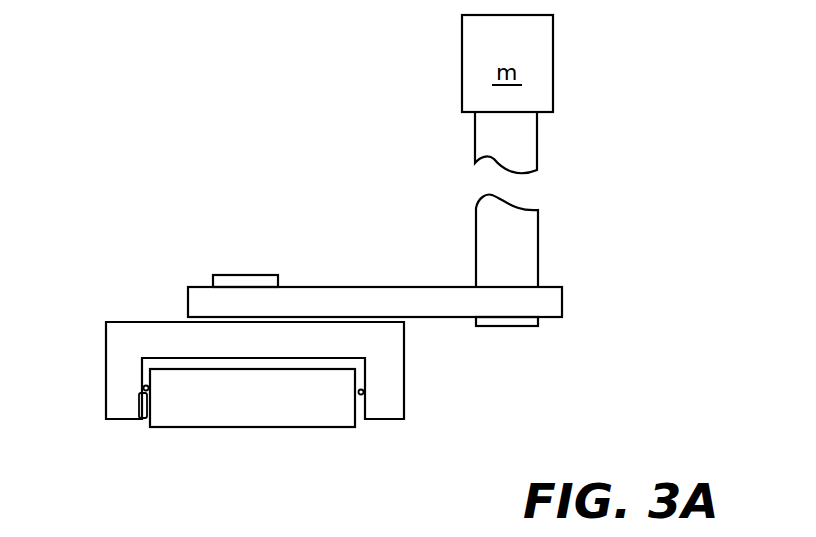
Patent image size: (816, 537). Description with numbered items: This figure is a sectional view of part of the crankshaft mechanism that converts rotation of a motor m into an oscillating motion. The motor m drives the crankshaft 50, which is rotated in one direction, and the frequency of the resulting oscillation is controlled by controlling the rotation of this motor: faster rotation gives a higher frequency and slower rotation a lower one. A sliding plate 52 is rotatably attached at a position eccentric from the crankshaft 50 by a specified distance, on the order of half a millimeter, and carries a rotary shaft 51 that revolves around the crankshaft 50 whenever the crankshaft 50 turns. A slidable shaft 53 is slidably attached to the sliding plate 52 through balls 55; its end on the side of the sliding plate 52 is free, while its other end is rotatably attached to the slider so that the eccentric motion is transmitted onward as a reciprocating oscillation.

The crankshaft 50 is at (503, 326).
The rotary shaft 51 is at (245, 275).
The sliding plate 52 is at (106, 331).
The slidable shaft 53 is at (228, 420).
The balls 55 is at (136, 418).